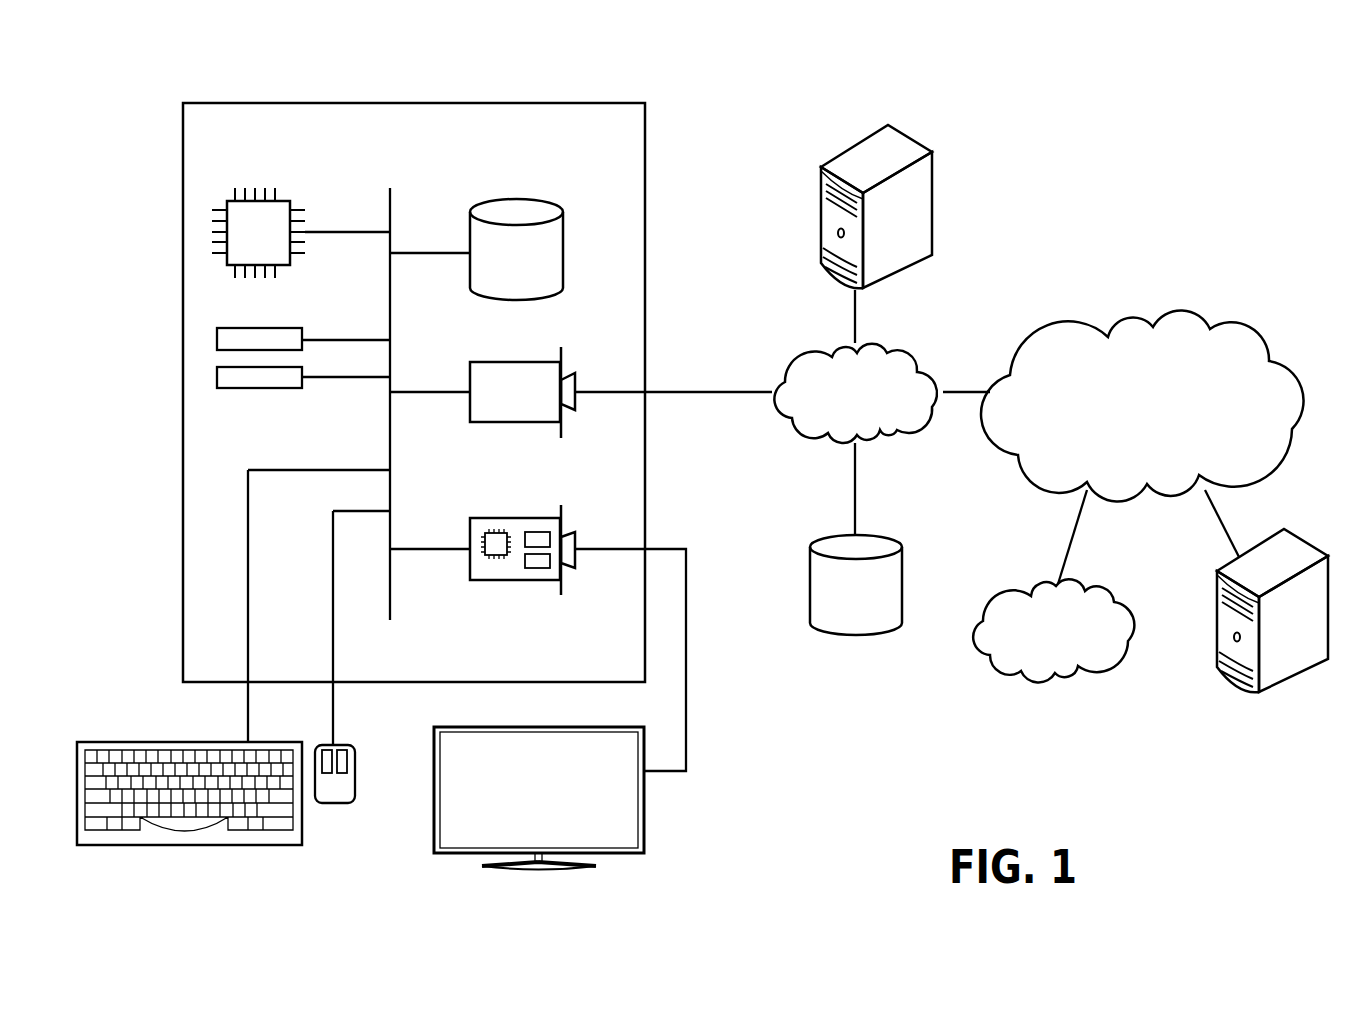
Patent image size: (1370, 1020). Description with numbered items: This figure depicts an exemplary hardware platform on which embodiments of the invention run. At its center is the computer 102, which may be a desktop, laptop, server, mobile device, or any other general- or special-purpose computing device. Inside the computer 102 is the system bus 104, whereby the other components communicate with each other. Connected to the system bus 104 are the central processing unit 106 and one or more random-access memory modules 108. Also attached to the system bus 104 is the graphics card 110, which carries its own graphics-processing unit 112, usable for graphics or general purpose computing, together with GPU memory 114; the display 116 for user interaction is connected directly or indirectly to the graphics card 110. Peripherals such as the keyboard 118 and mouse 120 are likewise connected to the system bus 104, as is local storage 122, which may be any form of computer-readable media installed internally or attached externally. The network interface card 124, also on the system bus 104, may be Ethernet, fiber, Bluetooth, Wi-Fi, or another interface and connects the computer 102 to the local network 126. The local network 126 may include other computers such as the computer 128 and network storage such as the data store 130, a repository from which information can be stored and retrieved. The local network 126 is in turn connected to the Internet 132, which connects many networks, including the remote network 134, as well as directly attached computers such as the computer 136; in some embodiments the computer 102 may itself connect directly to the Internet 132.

The computer 102 is at (593, 103).
The system bus 104 is at (390, 201).
The central processing unit 106 is at (285, 198).
The random-access memory modules 108 is at (302, 377).
The graphics card 110 is at (514, 550).
The graphics-processing unit 112 is at (496, 556).
The GPU memory 114 is at (537, 569).
The display 116 is at (645, 832).
The keyboard 118 is at (192, 845).
The mouse 120 is at (330, 805).
The local storage 122 is at (565, 235).
The network interface card 124 is at (469, 373).
The local network 126 is at (912, 345).
The computer 128 is at (912, 136).
The data store 130 is at (893, 537).
The Internet 132 is at (1203, 304).
The remote network 134 is at (1115, 584).
The computer 136 is at (1305, 533).